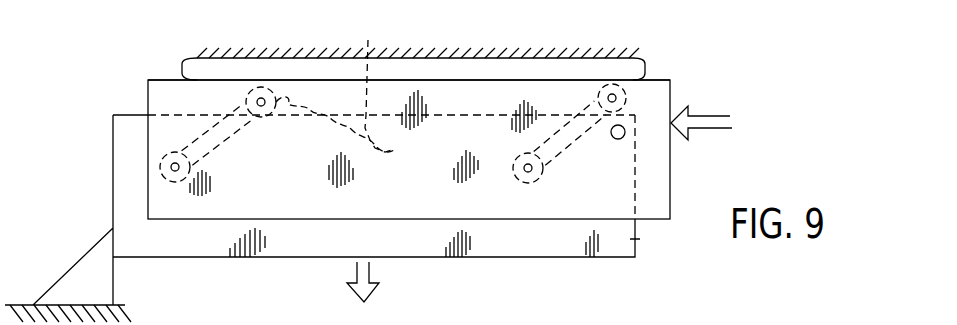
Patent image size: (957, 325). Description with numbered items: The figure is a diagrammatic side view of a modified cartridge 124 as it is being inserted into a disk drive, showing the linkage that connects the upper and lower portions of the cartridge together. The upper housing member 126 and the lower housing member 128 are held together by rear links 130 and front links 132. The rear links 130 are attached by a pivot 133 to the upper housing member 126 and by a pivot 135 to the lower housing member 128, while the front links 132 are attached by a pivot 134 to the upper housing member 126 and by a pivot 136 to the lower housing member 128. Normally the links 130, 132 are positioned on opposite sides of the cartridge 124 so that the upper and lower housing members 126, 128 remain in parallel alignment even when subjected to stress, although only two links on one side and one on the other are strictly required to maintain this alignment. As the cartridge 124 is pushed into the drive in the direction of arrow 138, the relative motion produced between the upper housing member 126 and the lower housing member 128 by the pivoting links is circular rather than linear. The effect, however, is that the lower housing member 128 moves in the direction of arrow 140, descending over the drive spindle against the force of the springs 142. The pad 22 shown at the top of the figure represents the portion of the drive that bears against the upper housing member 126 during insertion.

The pad 22 is at (643, 57).
The modified cartridge 124 is at (650, 80).
The upper housing member 126 is at (663, 170).
The lower housing member 128 is at (635, 242).
The rear links 130 is at (217, 147).
The front links 132 is at (563, 152).
The pivot 133 is at (246, 101).
The pivot 134 is at (612, 84).
The pivot 135 is at (162, 172).
The pivot 136 is at (537, 186).
The arrow 138 is at (705, 112).
The arrow 140 is at (370, 272).
The springs 142 is at (380, 33).